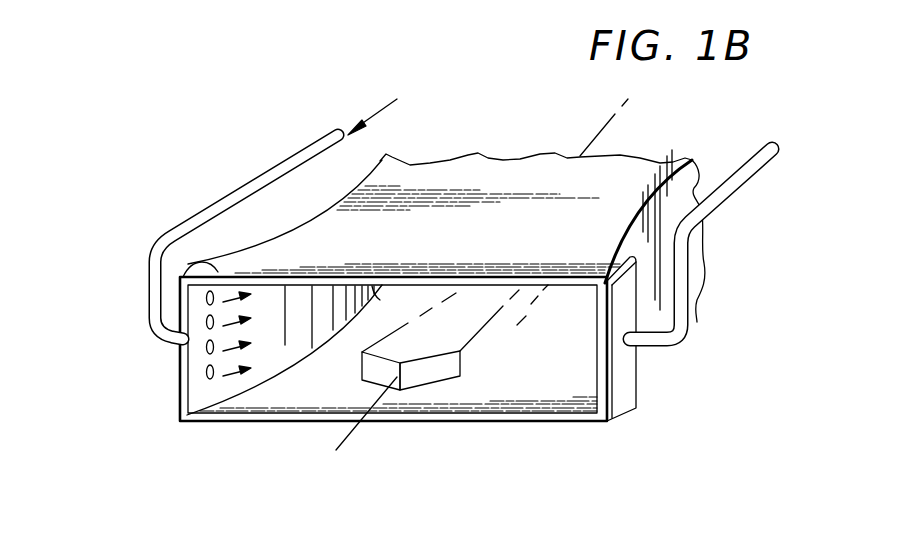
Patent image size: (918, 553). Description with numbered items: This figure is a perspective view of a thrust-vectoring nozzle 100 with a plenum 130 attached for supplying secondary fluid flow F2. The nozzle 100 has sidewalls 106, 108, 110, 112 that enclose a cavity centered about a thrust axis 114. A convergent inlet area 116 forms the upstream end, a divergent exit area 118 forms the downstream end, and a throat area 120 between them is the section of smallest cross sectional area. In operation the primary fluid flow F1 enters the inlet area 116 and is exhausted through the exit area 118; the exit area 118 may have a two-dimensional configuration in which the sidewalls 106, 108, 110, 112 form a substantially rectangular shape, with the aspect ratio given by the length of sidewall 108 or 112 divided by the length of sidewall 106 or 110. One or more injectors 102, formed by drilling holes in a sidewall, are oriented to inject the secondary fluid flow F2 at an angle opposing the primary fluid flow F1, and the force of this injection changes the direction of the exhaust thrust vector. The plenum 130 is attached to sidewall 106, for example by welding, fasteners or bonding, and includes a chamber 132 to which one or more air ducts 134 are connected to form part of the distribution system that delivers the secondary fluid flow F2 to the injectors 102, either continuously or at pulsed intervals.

The nozzle 100 is at (250, 126).
The injectors 102 is at (207, 371).
The sidewall 106 is at (662, 291).
The sidewall 108 is at (625, 172).
The sidewall 110 is at (198, 391).
The sidewall 112 is at (485, 388).
The thrust axis 114 is at (590, 137).
The convergent inlet area 116 is at (504, 161).
The divergent exit area 118 is at (252, 422).
The throat area 120 is at (307, 221).
The plenum 130 is at (645, 368).
The chamber 132 is at (628, 383).
The air ducts 134 is at (722, 196).
The primary fluid flow F1 is at (400, 390).
The secondary fluid flow F2 is at (232, 338).